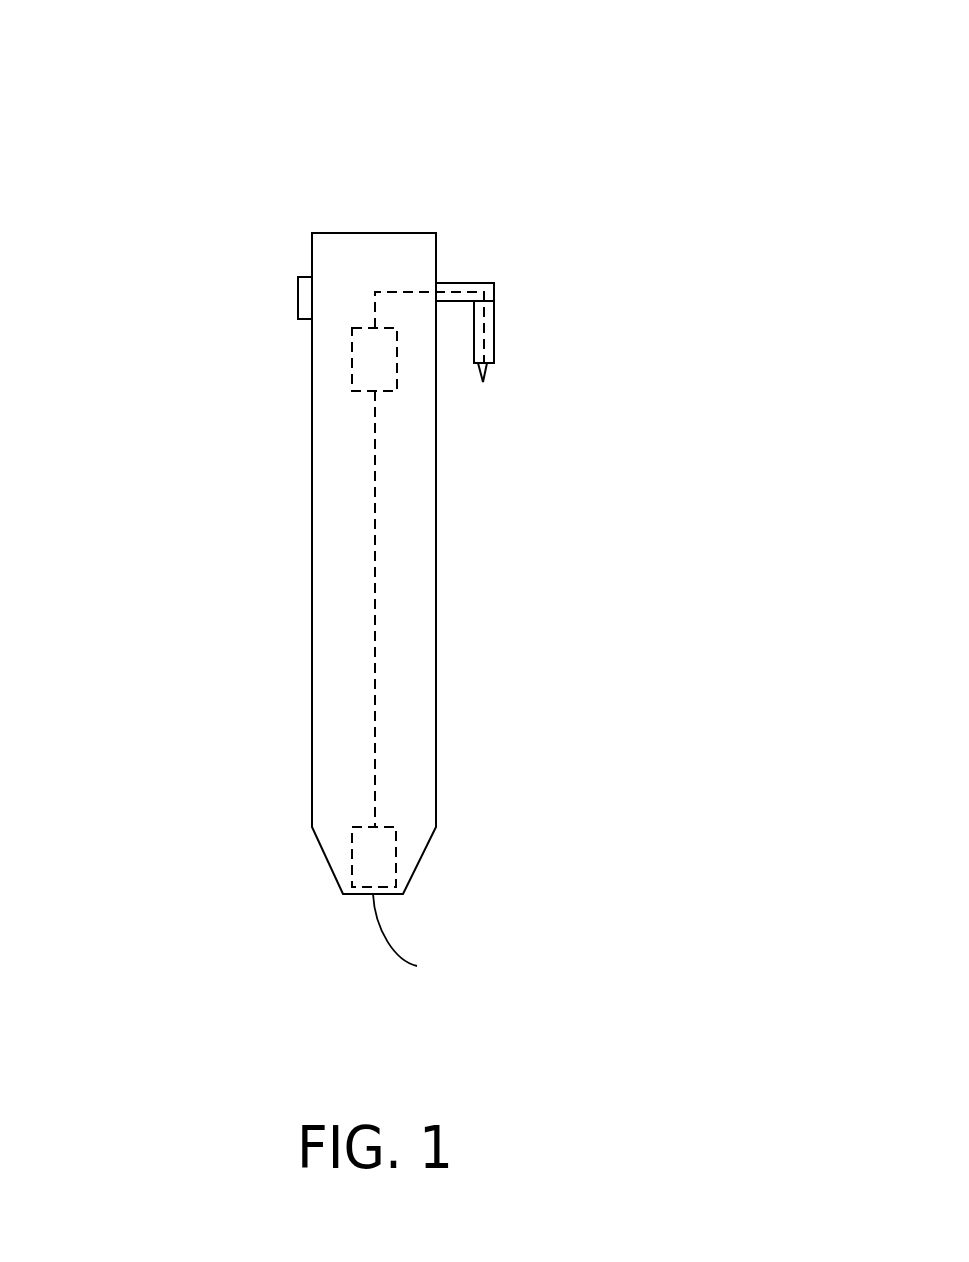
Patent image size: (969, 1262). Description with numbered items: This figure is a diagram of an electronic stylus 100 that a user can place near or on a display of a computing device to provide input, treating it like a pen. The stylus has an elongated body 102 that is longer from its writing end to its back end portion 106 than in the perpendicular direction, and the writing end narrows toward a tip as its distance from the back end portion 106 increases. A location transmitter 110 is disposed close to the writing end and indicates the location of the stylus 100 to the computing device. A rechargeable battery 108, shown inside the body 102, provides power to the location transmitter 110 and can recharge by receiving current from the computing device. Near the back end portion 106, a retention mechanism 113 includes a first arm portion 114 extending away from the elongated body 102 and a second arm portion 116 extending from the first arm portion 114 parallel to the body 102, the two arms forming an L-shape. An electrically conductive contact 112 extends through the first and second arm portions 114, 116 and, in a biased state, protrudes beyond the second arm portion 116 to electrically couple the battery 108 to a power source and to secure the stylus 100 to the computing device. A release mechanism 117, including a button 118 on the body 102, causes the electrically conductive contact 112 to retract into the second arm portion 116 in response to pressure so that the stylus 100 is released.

The electronic stylus 100 is at (195, 92).
The elongated body 102 is at (312, 640).
The back end portion 106 is at (398, 233).
The rechargeable battery 108 is at (344, 381).
The location transmitter 110 is at (353, 858).
The electrically conductive contact 112 is at (483, 382).
The retention mechanism 113 is at (588, 273).
The first arm portion 114 is at (480, 283).
The second arm portion 116 is at (495, 327).
The release mechanism 117 is at (285, 242).
The button 118 is at (298, 308).